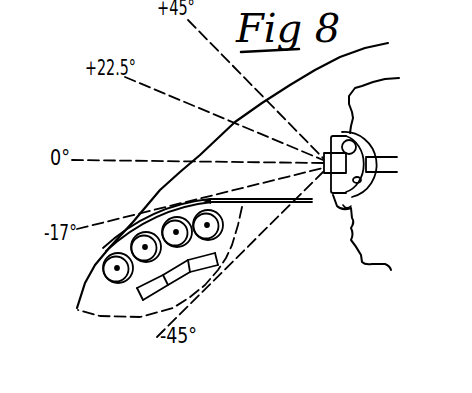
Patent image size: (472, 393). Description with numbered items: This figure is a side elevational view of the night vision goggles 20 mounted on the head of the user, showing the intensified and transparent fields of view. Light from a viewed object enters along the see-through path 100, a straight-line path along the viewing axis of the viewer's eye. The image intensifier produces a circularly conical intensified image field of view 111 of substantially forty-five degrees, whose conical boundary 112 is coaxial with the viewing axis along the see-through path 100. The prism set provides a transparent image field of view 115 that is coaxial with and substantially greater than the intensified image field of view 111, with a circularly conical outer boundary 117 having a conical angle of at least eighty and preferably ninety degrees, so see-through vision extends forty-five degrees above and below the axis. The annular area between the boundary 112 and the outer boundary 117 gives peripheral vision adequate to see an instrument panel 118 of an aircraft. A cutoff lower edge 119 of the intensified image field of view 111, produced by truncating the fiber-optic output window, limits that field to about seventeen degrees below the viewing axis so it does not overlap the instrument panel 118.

The night vision goggles 20 is at (333, 130).
The see-through path 100 is at (125, 158).
The intensified image field of view 111 is at (152, 112).
The conical boundary 112 is at (212, 110).
The transparent image field of view 115 is at (243, 100).
The outer boundary 117 is at (218, 45).
The instrument panel 118 is at (190, 273).
The cutoff lower edge 119 is at (264, 188).